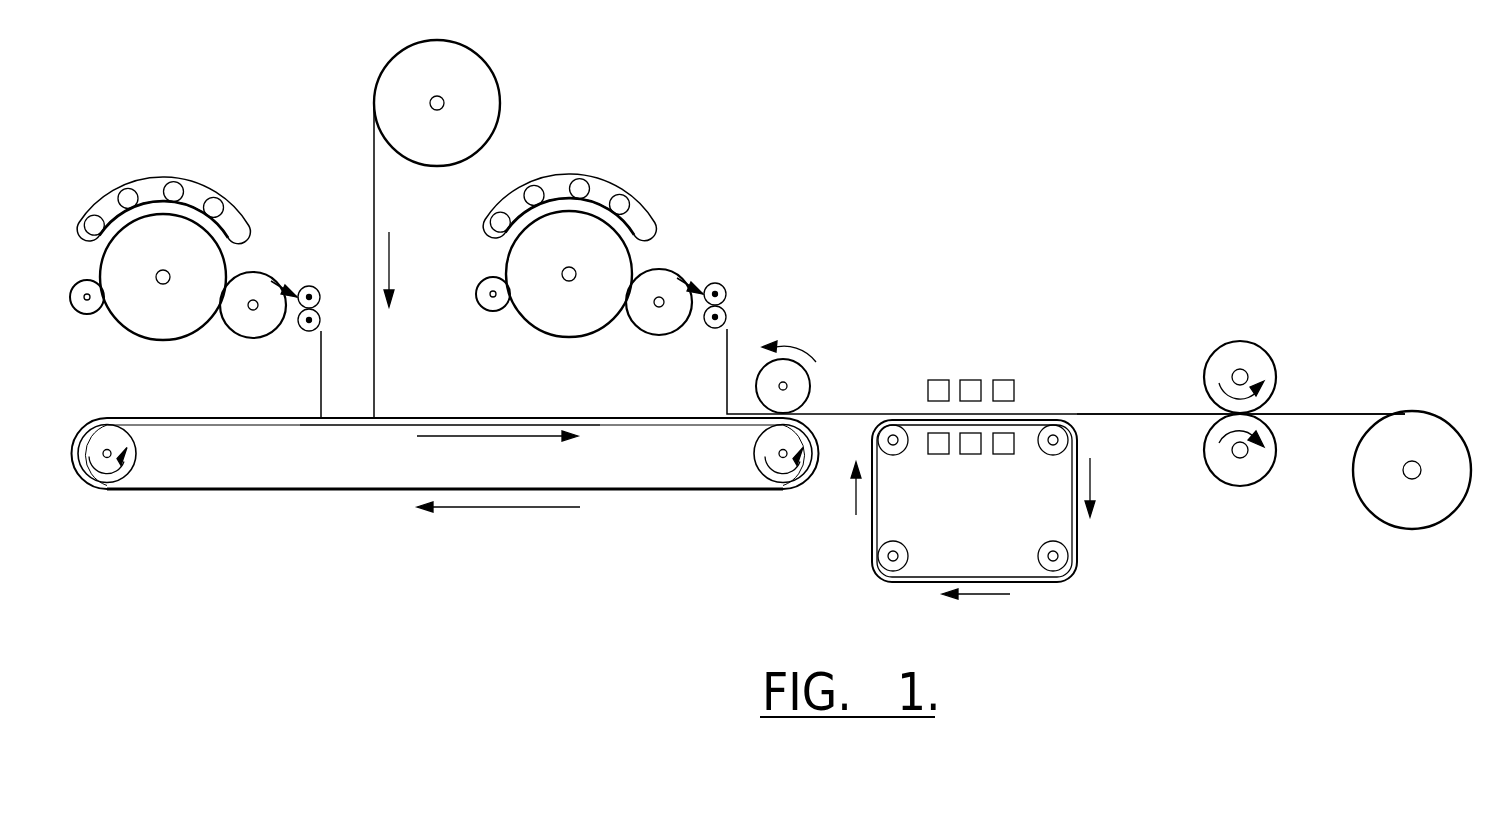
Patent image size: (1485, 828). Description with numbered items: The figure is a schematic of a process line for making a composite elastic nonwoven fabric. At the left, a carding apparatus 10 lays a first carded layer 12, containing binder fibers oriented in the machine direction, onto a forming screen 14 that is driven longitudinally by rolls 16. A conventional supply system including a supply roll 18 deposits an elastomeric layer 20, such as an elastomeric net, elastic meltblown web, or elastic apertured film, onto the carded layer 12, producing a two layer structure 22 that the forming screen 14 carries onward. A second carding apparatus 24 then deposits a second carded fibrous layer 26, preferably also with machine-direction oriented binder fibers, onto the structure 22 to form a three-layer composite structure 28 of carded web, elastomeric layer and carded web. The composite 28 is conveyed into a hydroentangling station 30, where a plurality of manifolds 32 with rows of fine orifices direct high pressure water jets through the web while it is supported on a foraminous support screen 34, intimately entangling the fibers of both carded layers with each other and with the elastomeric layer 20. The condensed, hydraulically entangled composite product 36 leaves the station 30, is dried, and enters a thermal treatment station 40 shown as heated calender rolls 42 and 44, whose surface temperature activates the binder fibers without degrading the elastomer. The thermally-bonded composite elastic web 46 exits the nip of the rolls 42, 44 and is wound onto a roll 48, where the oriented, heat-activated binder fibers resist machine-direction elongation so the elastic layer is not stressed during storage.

The carding apparatus 10 is at (200, 185).
The first carded layer 12 is at (318, 373).
The forming screen 14 is at (278, 430).
The rolls 16 is at (133, 464).
The supply roll 18 is at (468, 67).
The elastomeric layer 20 is at (373, 253).
The two layer structure 22 is at (480, 417).
The second carding apparatus 24 is at (610, 183).
The second carded fibrous layer 26 is at (730, 335).
The three-layer composite structure 28 is at (823, 412).
The hydroentangling station 30 is at (998, 290).
The manifolds 32 is at (938, 391).
The foraminous support screen 34 is at (895, 452).
The hydraulically entangled composite product 36 is at (1045, 413).
The thermal treatment station 40 is at (1225, 288).
The heated calender roll 42 is at (1273, 367).
The heated calender roll 44 is at (1258, 475).
The thermally-bonded composite elastic web 46 is at (1337, 410).
The roll 48 is at (1398, 510).